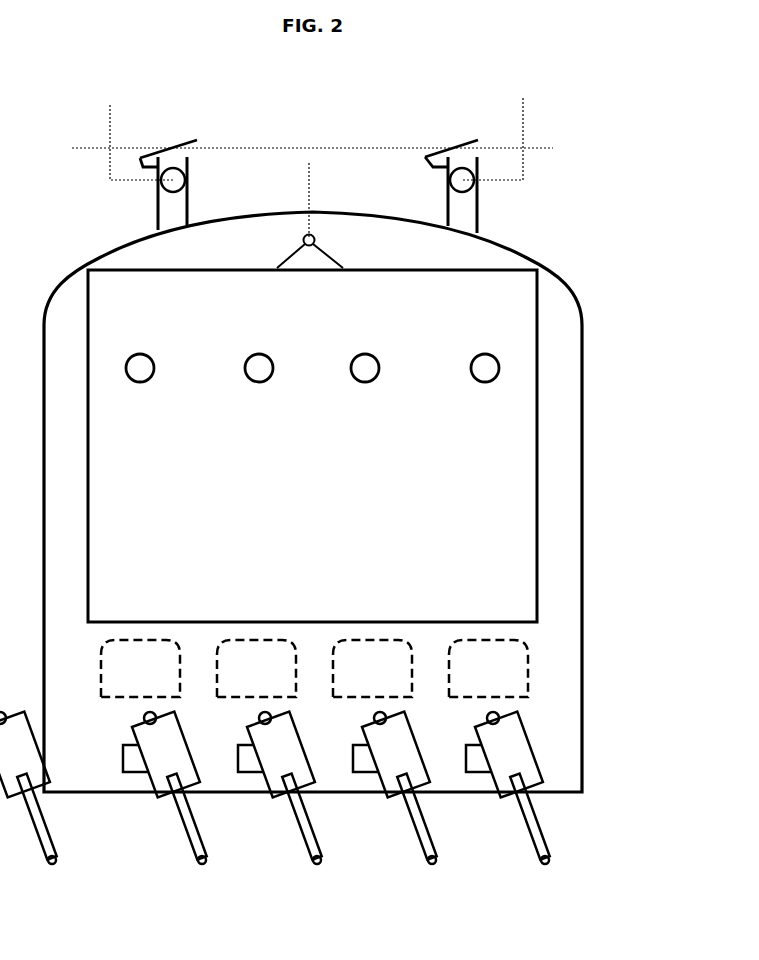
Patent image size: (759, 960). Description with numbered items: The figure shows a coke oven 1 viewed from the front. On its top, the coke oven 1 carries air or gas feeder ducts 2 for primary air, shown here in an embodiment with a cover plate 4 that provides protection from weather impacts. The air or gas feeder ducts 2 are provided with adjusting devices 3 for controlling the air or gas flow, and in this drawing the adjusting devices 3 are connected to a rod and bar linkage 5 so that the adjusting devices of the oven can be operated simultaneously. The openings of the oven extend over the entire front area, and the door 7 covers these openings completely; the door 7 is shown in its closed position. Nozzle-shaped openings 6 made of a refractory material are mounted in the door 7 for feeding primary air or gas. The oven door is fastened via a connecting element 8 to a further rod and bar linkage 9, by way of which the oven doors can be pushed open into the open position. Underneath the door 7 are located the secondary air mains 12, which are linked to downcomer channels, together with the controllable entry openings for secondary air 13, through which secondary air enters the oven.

The coke oven 1 is at (566, 273).
The air or gas feeder ducts 2 is at (480, 164).
The adjusting devices 3 is at (195, 170).
The cover plate 4 is at (145, 153).
The rod and bar linkage 5 is at (278, 142).
The nozzle-shaped openings 6 is at (490, 352).
The door 7 is at (230, 264).
The connecting element 8 is at (320, 230).
The rod and bar linkage 9 is at (317, 153).
The secondary air mains 12 is at (408, 669).
The entry openings for secondary air 13 is at (355, 752).